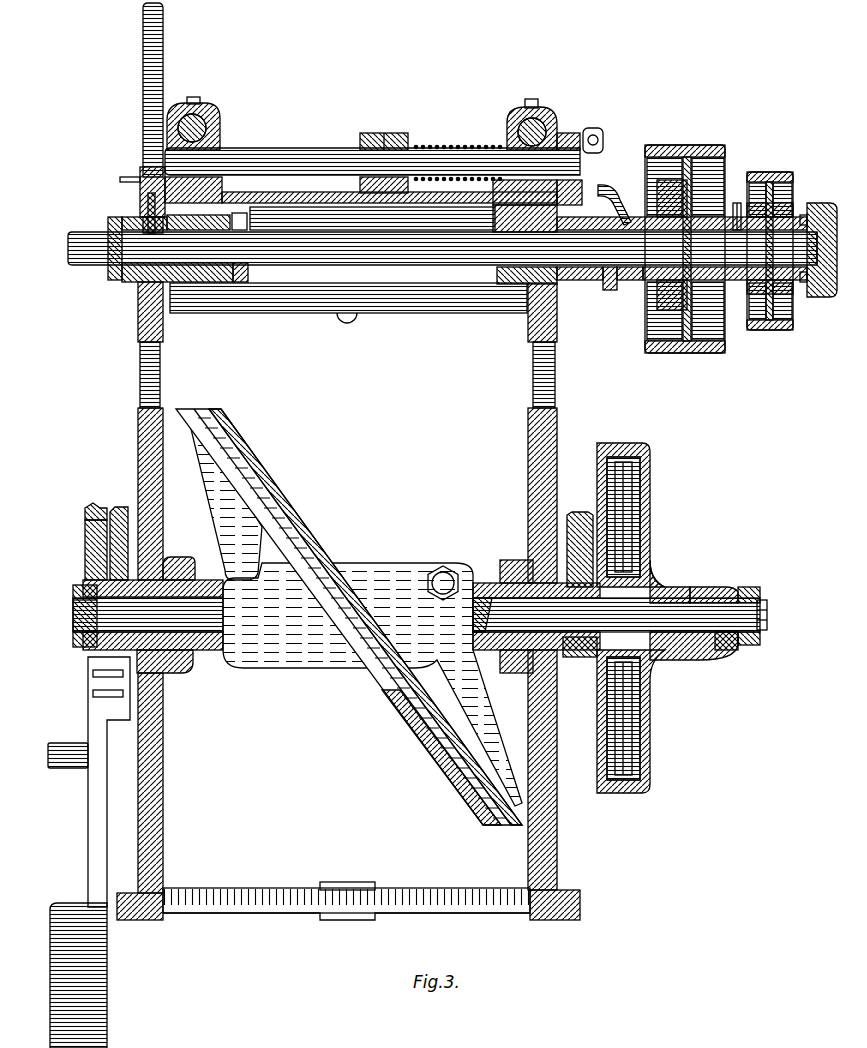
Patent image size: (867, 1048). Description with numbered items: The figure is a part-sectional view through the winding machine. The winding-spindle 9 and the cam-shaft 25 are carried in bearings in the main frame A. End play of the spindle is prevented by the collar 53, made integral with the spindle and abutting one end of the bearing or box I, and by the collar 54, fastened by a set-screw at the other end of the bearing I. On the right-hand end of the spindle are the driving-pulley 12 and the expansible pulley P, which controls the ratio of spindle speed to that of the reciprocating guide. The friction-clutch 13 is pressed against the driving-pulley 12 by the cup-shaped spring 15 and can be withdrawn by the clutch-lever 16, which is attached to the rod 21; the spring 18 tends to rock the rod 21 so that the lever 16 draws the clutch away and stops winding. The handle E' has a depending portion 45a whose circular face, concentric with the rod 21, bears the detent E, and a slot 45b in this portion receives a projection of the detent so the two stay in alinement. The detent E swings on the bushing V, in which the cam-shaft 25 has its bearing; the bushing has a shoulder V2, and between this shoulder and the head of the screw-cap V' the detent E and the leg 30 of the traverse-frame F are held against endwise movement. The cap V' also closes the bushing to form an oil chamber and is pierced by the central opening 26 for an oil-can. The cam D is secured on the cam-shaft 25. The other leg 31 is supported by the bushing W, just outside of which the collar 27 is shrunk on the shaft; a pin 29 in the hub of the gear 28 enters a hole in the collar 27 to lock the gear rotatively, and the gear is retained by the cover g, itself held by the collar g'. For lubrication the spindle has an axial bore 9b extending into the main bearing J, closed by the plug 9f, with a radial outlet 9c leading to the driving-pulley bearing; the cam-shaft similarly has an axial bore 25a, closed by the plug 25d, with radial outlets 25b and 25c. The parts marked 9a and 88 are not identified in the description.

The main frame A is at (162, 813).
The bearing or box I is at (176, 283).
The collar 53 is at (108, 272).
The collar 54 is at (238, 283).
The handle E' is at (154, 92).
The depending portion 45a is at (140, 190).
The slot 45b is at (140, 212).
The shaft or rod 21 is at (287, 163).
The spring 18 is at (438, 150).
The winding-spindle 9 is at (68, 247).
The clutch-lever 16 is at (612, 183).
The main bearing J is at (598, 281).
The shaft collar 9a is at (582, 279).
The cup-shaped spring 15 is at (609, 290).
The friction-clutch 13 is at (630, 281).
The axial bore 9b is at (748, 266).
The radial outlet 9c is at (682, 243).
The driving-pulley 12 is at (707, 354).
The expansible pulley P is at (770, 330).
The plug 9f is at (823, 262).
The leg 30 is at (93, 503).
The traverse-frame F is at (85, 535).
The detent E is at (90, 761).
The stud 88 is at (63, 768).
The shoulder V2 is at (167, 557).
The screw-cap V' is at (135, 644).
The bushing V is at (166, 678).
The central axial opening 26 is at (76, 618).
The cam-shaft 25 is at (203, 620).
The cam D is at (247, 467).
The bushing or bearing W is at (490, 583).
The radial outlet 25b is at (508, 568).
The leg 31 is at (578, 512).
The collar 27 is at (595, 655).
The frame or cover g is at (632, 618).
The gear 28 is at (650, 740).
The pin 29 is at (661, 572).
The radial outlet 25c is at (696, 589).
The collar g' is at (772, 596).
The plug 25d is at (762, 620).
The axial bore 25a is at (730, 625).